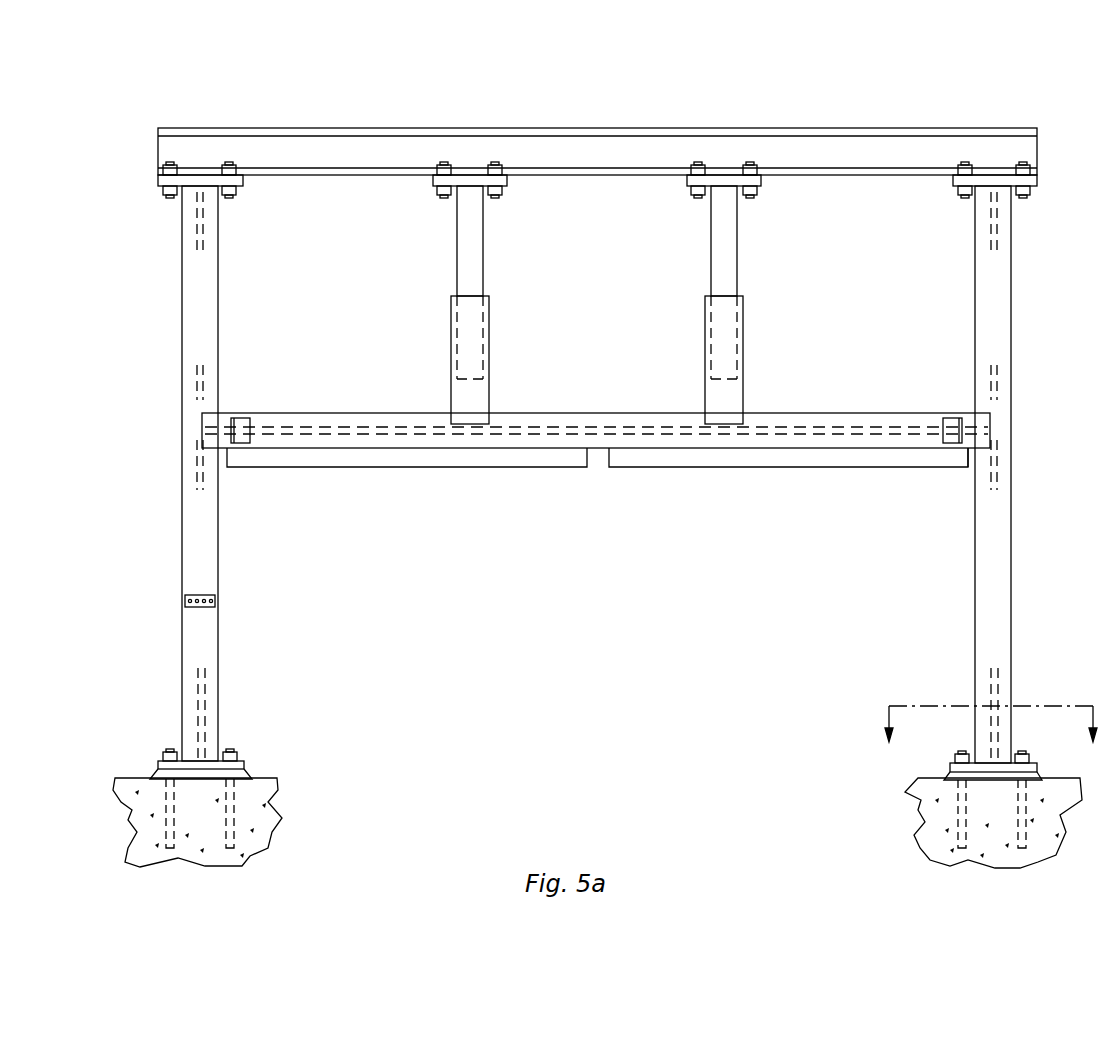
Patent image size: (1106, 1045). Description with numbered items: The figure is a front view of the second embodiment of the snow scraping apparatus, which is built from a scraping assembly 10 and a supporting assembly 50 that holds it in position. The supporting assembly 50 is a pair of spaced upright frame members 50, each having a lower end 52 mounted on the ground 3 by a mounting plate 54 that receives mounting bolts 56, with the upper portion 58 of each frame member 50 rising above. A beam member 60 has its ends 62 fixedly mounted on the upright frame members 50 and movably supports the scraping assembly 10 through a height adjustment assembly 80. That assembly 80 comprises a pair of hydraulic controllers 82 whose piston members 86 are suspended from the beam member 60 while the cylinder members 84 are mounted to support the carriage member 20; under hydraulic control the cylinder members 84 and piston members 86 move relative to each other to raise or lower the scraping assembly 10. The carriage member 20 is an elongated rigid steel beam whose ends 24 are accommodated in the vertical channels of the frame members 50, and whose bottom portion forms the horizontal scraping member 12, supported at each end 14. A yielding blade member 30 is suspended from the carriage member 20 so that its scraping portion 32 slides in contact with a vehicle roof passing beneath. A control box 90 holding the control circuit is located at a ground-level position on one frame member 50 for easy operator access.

The ground 3 is at (265, 797).
The scraping assembly 10 is at (348, 392).
The scraping member 12 is at (598, 448).
The end 14 is at (592, 426).
The carriage member 20 is at (596, 399).
The ends 24 is at (596, 430).
The blade member 30 is at (966, 457).
The scraping portion 32 is at (672, 460).
The upright frame member 50 is at (604, 517).
The lower end 52 is at (200, 735).
The mounting plate 54 is at (185, 765).
The mounting bolts 56 is at (172, 790).
The upper portion 58 is at (625, 474).
The beam member 60 is at (590, 166).
The ends 62 is at (206, 158).
The height adjustment assembly 80 is at (615, 305).
The hydraulic controller 82 is at (467, 332).
The cylinder member 84 is at (603, 343).
The piston member 86 is at (485, 253).
The control box 90 is at (213, 605).